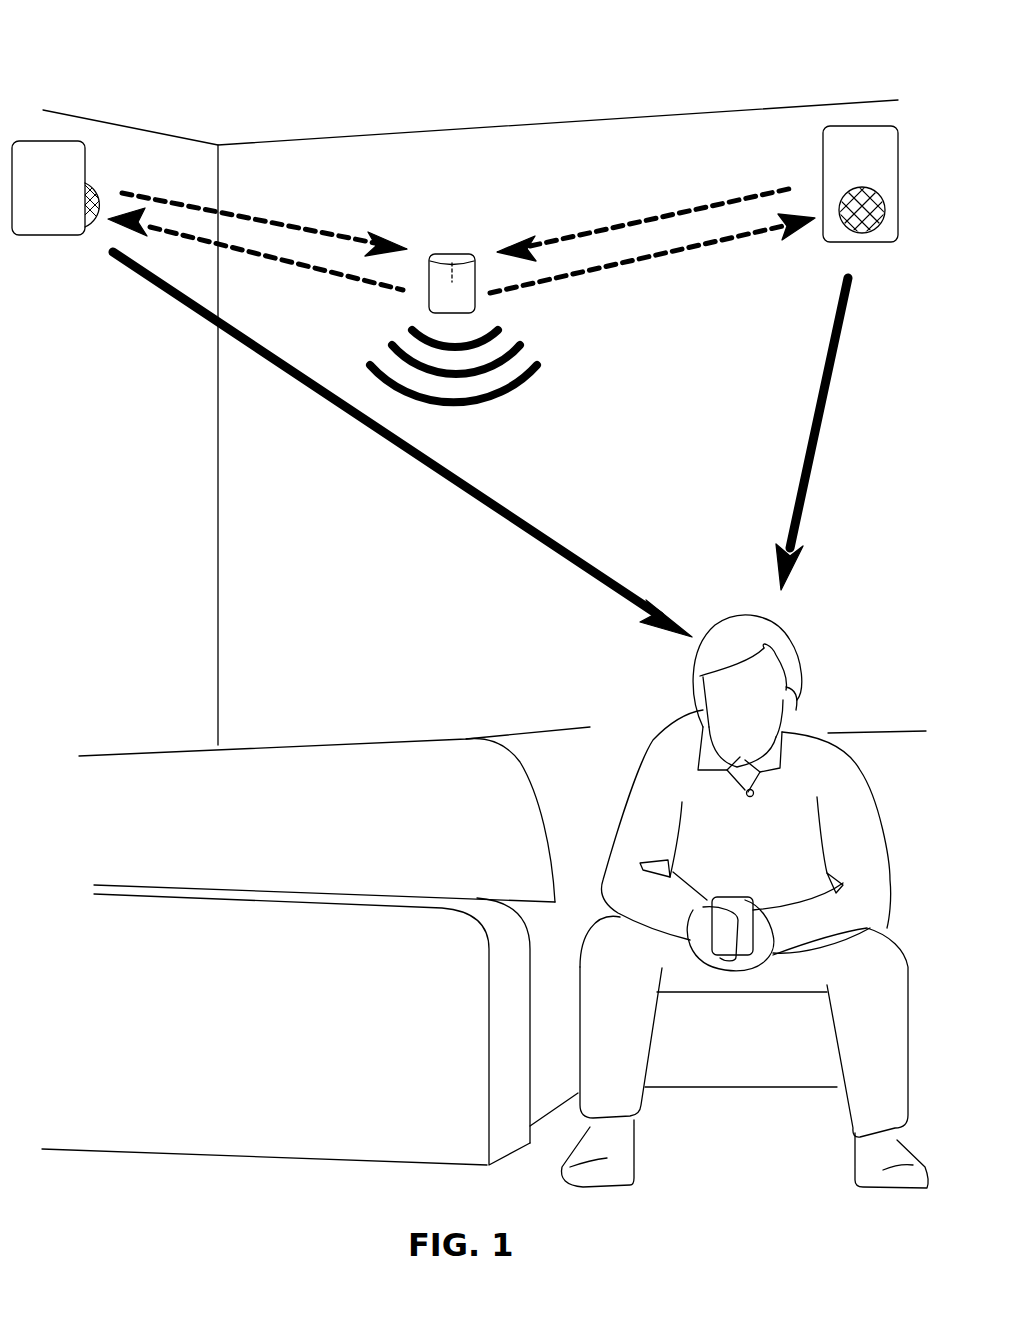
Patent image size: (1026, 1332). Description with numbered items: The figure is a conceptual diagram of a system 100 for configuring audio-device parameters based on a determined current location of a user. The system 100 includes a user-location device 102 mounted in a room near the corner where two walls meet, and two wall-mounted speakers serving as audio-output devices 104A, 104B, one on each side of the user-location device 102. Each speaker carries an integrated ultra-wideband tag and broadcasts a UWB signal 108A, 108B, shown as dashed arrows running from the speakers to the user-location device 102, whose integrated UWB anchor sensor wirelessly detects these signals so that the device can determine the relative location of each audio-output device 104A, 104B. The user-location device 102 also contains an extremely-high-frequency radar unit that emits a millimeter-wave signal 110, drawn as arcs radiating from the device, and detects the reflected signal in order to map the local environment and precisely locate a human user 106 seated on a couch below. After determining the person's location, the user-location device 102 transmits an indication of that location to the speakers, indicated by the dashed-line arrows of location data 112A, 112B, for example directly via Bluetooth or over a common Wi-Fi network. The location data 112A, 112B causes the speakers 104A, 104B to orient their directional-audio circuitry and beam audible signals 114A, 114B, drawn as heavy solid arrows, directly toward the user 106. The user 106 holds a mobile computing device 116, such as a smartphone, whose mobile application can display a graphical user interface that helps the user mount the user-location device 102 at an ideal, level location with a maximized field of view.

The system 100 is at (128, 58).
The user-location device 102 is at (452, 256).
The audio-output device 104A is at (75, 173).
The audio-output device 104B is at (886, 165).
The user 106 is at (806, 728).
The UWB signal 108A is at (340, 235).
The UWB signal 108B is at (563, 237).
The millimeter-wave signal 110 is at (520, 380).
The location data 112A is at (345, 275).
The location data 112B is at (565, 277).
The audible signal 114A is at (513, 523).
The audible signal 114B is at (816, 457).
The mobile computing device 116 is at (723, 907).